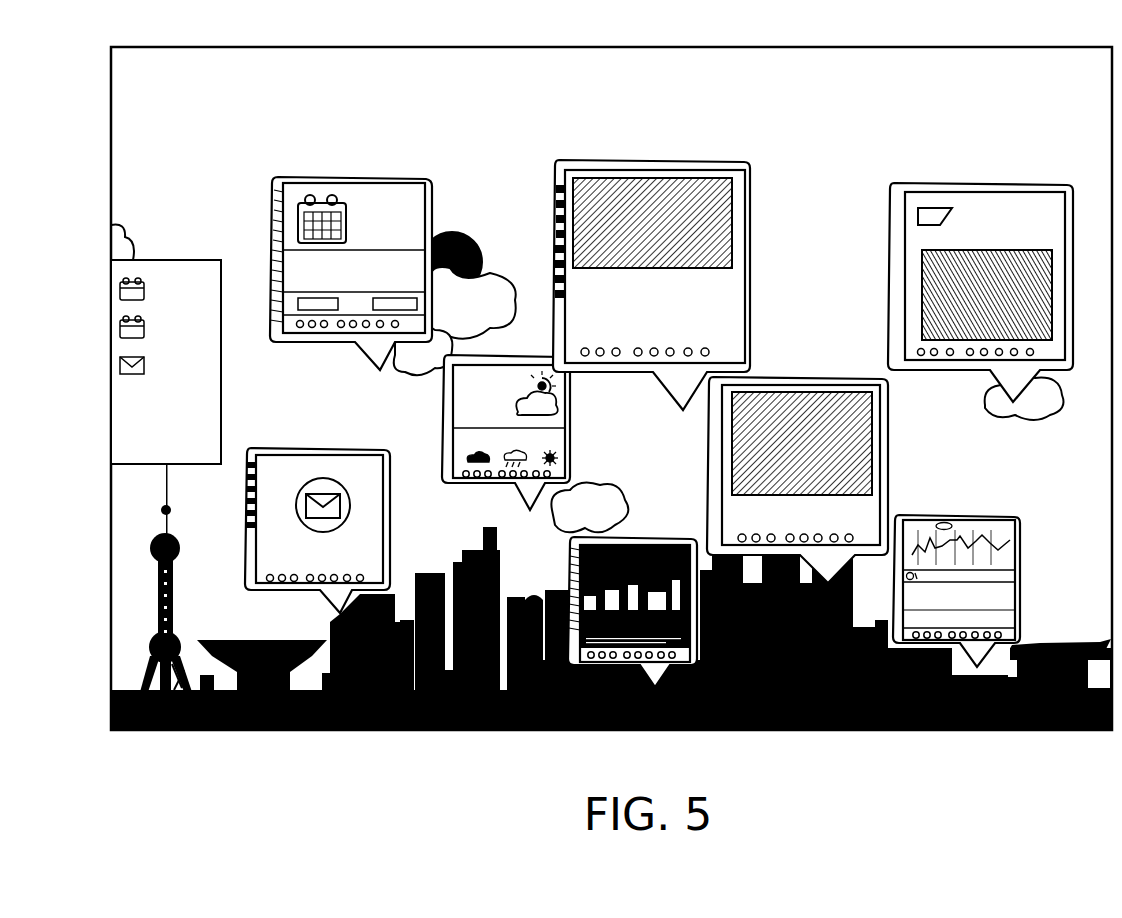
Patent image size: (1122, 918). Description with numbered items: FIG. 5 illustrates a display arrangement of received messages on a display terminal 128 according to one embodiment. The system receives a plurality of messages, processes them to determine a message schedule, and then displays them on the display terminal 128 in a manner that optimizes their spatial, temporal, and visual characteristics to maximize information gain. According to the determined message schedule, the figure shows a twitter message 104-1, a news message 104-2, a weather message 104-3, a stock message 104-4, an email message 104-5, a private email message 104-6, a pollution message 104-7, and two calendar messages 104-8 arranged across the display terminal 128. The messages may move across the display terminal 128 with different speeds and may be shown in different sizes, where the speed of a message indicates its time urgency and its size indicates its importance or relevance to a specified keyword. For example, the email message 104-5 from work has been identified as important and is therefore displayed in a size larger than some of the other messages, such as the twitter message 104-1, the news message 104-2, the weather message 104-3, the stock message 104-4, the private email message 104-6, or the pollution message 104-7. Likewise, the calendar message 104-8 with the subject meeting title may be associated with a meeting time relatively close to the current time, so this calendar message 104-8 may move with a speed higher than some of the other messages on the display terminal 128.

The display terminal 128 is at (611, 388).
The twitter message 104-1 is at (998, 183).
The news message 104-2 is at (815, 377).
The weather message 104-3 is at (571, 438).
The stock message 104-4 is at (980, 515).
The email message 104-5 is at (751, 193).
The private email message 104-6 is at (296, 448).
The pollution message 104-7 is at (645, 537).
The calendar message 104-8 is at (181, 260).